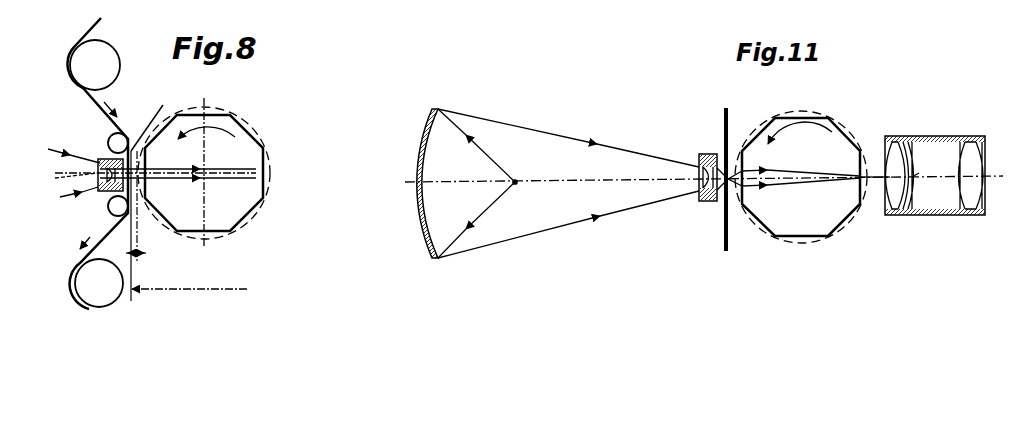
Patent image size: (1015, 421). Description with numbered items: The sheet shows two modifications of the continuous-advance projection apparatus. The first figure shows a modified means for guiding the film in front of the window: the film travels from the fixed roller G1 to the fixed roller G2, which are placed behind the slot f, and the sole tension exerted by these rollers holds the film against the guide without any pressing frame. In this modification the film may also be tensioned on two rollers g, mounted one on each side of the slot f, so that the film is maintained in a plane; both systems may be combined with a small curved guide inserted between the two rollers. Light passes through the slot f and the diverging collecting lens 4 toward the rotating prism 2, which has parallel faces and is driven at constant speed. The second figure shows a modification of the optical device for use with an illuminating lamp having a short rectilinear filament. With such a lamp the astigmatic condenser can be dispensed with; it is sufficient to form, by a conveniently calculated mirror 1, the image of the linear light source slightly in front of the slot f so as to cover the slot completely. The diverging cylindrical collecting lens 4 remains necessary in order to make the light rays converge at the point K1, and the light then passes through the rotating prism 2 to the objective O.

In FIG. 8, the fixed roller G1 is at (104, 56).
In FIG. 8, the fixed roller G2 is at (110, 292).
In FIG. 8, the rollers g is at (108, 140).
In FIG. 8, the diverging cylindrical collecting lens 4 is at (98, 184).
In FIG. 11, the diverging cylindrical collecting lens 4 is at (715, 201).
In FIG. 8, the window of reduced height f is at (147, 198).
In FIG. 11, the window of reduced height f is at (748, 150).
In FIG. 8, the rotating prism with parallel faces 2 is at (243, 141).
In FIG. 11, the rotating prism with parallel faces 2 is at (873, 122).
In FIG. 11, the mirror 1 is at (427, 155).
In FIG. 11, the objective O is at (940, 150).
In FIG. 11, the point K1 is at (924, 181).